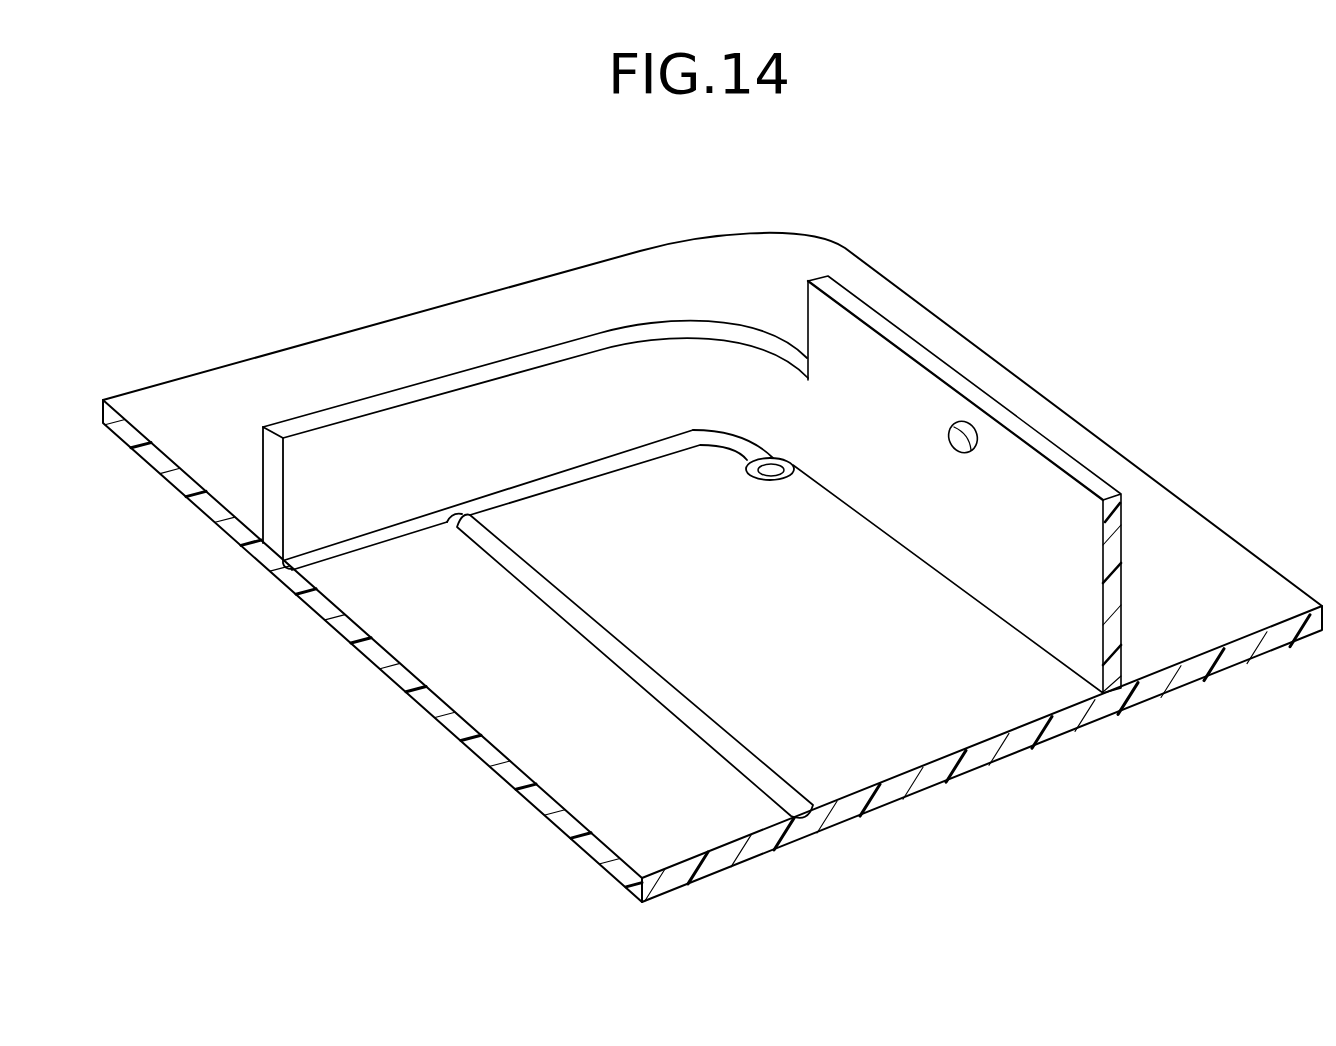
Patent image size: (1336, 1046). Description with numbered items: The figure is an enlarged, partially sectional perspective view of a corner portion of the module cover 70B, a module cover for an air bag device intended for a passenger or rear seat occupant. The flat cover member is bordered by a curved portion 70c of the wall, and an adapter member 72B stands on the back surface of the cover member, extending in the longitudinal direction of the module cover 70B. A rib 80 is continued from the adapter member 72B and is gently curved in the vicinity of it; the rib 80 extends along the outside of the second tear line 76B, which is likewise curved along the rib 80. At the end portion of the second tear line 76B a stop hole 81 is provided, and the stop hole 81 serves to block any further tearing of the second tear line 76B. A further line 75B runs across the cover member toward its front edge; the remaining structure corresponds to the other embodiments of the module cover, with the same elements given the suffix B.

The module cover 70B is at (828, 218).
The curved corner wall portion 70c is at (620, 282).
The rib 80 is at (487, 415).
The adapter member 72B is at (893, 378).
The second tear line 76B is at (616, 462).
The stop hole 81 is at (781, 482).
The rib 75B is at (648, 670).